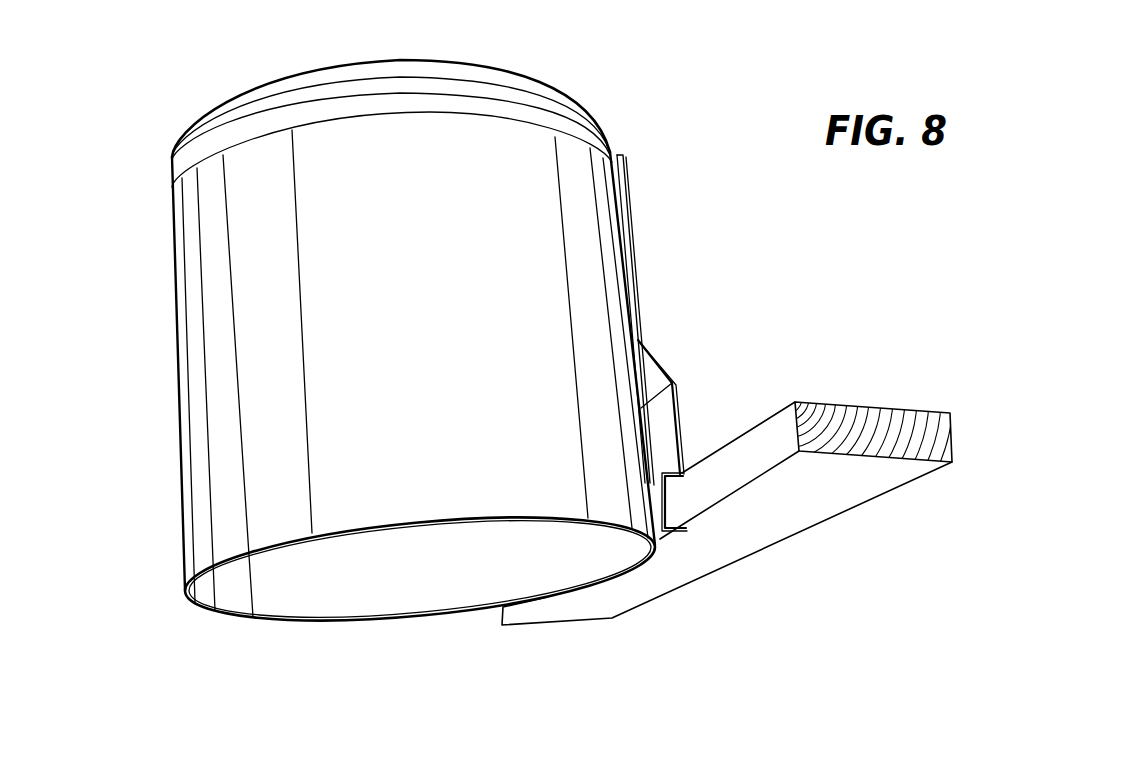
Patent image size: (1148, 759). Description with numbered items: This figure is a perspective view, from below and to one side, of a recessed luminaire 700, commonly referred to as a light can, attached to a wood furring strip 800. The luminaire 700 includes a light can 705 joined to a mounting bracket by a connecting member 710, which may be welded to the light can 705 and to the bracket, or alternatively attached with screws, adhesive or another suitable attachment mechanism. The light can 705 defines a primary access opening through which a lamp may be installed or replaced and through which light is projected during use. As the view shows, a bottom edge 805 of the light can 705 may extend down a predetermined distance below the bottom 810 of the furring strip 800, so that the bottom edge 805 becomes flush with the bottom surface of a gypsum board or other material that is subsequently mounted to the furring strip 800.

The recessed luminaire 700 is at (153, 139).
The light can 705 is at (182, 520).
The connecting member 710 is at (651, 353).
The furring strip 800 is at (897, 404).
The bottom edge 805 is at (348, 622).
The bottom 810 is at (838, 492).